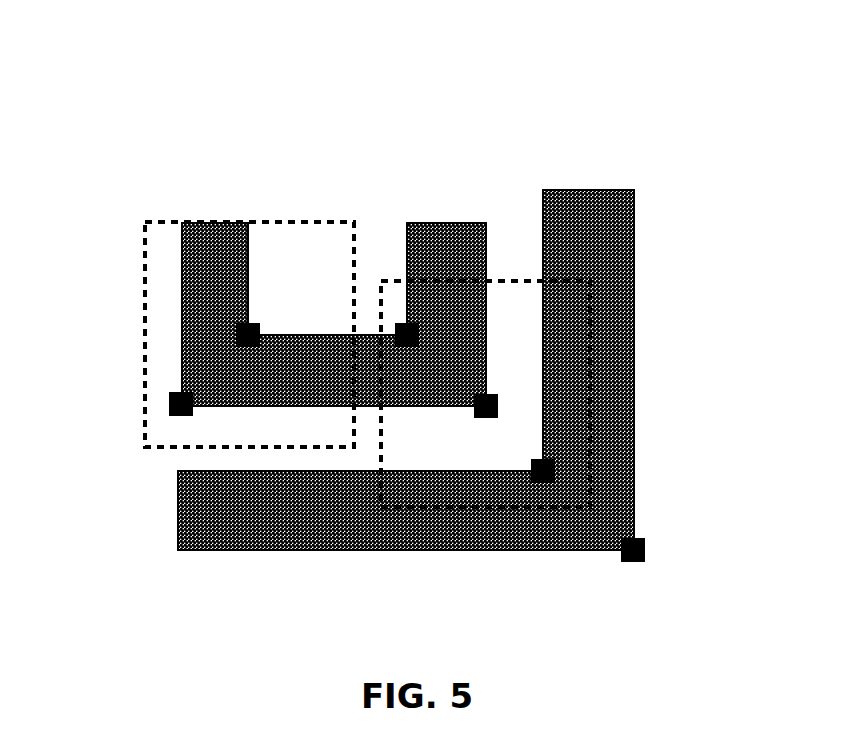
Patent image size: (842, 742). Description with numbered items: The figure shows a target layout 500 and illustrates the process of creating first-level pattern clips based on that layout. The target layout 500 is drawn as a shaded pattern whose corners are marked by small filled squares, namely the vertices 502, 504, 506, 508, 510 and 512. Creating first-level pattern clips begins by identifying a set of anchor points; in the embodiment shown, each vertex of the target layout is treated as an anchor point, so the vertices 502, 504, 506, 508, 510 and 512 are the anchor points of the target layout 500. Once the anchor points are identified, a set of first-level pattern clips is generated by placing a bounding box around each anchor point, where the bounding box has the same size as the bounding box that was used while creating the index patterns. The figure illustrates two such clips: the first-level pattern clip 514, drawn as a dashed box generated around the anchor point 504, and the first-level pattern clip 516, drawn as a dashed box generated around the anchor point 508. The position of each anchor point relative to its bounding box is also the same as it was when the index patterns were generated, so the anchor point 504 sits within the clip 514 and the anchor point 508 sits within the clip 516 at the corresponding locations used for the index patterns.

The target layout 500 is at (522, 54).
The vertex 502 is at (168, 415).
The vertex 504 is at (260, 335).
The vertex 506 is at (420, 337).
The vertex 508 is at (485, 418).
The vertex 510 is at (548, 459).
The vertex 512 is at (644, 554).
The first-level pattern clip 514 is at (145, 247).
The first-level pattern clip 516 is at (590, 322).